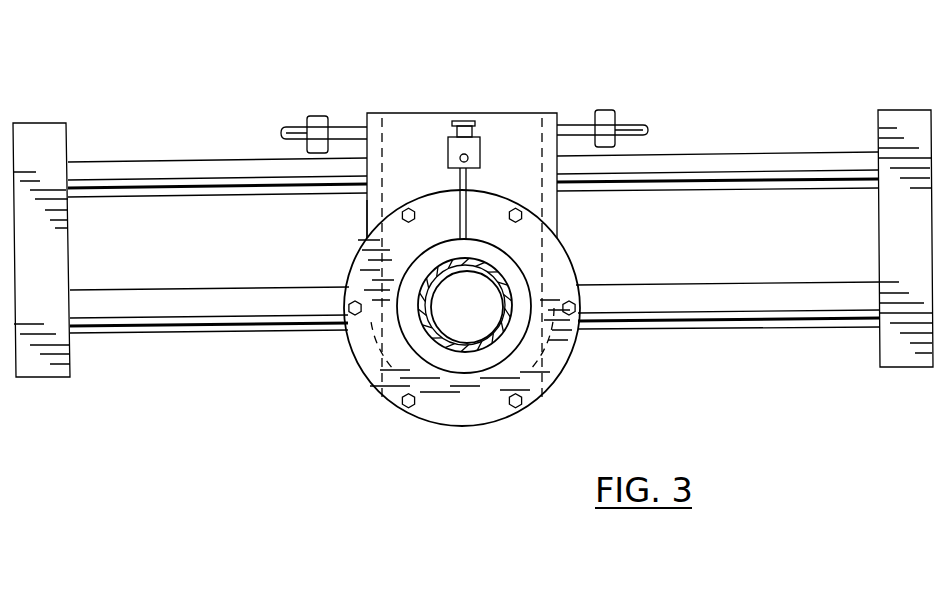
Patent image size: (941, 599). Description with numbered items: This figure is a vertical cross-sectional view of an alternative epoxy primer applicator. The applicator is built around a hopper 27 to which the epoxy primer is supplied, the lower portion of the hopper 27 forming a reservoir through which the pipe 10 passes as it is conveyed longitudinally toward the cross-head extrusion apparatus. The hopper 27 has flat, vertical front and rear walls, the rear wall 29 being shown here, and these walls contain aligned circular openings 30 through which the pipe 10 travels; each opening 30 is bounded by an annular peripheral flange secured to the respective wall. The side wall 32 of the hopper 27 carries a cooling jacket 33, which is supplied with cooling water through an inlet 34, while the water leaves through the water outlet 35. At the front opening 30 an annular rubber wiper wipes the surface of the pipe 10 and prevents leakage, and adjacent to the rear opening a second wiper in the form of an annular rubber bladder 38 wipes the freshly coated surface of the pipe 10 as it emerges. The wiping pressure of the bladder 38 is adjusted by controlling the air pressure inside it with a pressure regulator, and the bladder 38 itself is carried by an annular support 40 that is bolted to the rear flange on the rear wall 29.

The pipe 10 is at (457, 340).
The hopper 27 is at (434, 86).
The rear wall 29 is at (517, 122).
The circular opening 30 is at (428, 311).
The side wall 32 is at (366, 207).
The cooling jacket 33 is at (383, 148).
The inlet 34 is at (292, 122).
The water outlet 35 is at (633, 122).
The annular rubber bladder 38 is at (515, 279).
The annular support 40 is at (575, 352).